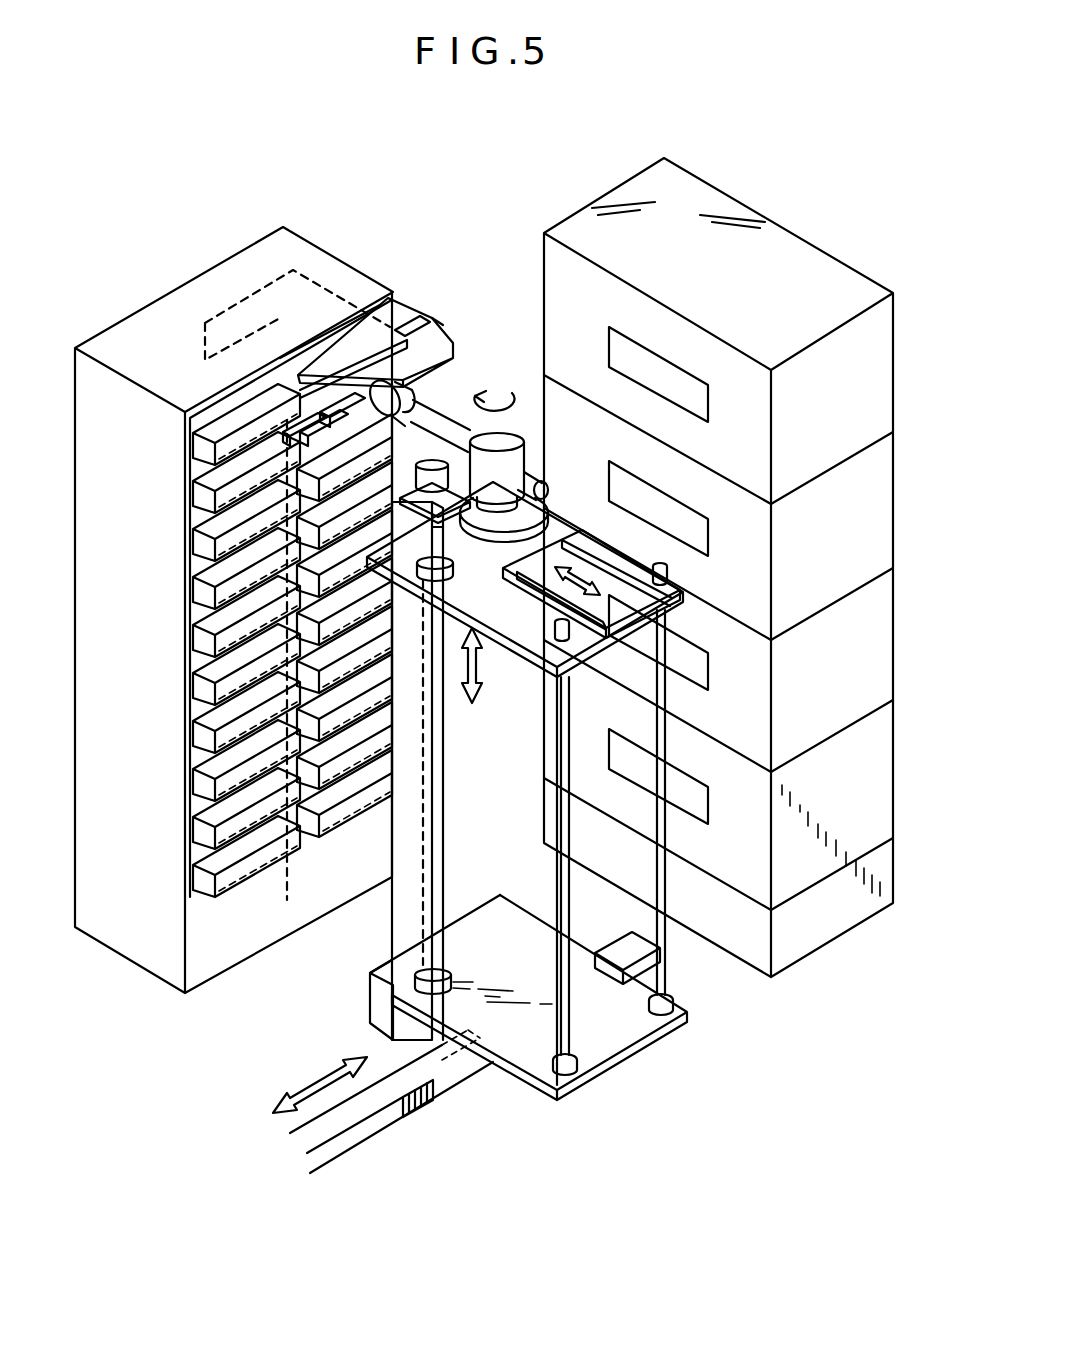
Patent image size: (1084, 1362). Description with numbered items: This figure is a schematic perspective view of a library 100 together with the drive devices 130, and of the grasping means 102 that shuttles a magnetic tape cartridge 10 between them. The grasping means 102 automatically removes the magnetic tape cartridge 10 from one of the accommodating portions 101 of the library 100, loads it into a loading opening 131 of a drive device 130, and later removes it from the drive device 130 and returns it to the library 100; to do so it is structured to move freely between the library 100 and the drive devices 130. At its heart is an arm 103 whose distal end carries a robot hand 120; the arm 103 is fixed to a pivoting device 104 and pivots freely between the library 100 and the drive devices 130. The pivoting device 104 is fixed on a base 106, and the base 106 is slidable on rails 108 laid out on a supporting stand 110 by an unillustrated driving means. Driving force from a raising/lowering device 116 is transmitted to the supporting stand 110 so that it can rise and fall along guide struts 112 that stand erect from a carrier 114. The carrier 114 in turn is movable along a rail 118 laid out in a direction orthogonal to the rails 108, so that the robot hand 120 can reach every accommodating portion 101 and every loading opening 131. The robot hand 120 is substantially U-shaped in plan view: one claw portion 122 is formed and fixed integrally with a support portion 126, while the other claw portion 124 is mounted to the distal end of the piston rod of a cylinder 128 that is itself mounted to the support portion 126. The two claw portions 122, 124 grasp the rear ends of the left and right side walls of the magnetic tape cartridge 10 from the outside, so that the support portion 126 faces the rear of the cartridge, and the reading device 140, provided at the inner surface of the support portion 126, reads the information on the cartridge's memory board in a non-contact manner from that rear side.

The magnetic tape cartridge 10 is at (248, 293).
The library 100 is at (371, 226).
The accommodating portions 101 is at (197, 880).
The grasping means 102 is at (505, 385).
The arm 103 is at (425, 408).
The pivoting device 104 is at (506, 455).
The base 106 is at (562, 535).
The rails 108 is at (600, 622).
The supporting stand 110 is at (538, 633).
The guide struts 112 is at (550, 872).
The carrier 114 is at (603, 1027).
The raising/lowering device 116 is at (450, 491).
The rail 118 is at (383, 1115).
The robot hand 120 is at (450, 322).
The claw portion 122 is at (423, 330).
The claw portion 124 is at (305, 437).
The support portion 126 is at (437, 368).
The cylinder 128 is at (362, 410).
The drive device 130 is at (778, 250).
The loading openings 131 is at (700, 385).
The reading device 140 is at (407, 330).